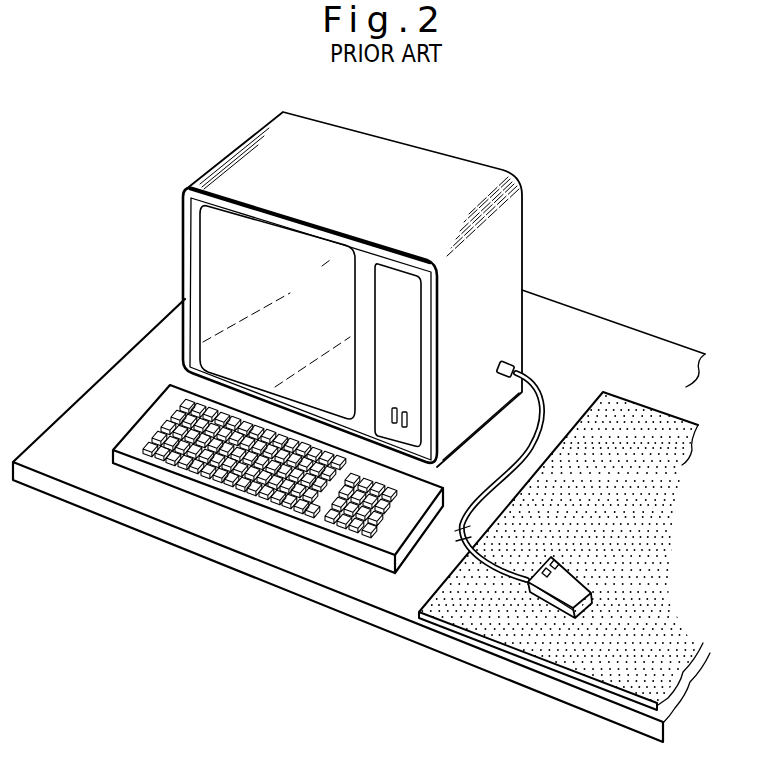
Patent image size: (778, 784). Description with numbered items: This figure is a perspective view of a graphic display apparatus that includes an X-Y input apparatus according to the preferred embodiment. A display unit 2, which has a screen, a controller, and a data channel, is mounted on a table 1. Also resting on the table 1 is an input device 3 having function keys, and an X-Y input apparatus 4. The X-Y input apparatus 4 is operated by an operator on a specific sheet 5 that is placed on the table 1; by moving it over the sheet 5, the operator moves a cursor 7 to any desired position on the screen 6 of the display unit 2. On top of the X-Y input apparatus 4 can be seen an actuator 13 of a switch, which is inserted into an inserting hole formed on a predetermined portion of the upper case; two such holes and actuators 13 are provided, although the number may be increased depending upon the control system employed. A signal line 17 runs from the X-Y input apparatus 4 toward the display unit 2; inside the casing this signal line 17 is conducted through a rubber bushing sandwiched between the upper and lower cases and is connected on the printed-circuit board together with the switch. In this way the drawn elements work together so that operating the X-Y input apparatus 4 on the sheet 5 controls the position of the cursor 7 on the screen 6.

The table 1 is at (305, 562).
The display unit 2 is at (413, 167).
The input device 3 is at (223, 500).
The X-Y input apparatus 4 is at (556, 595).
The specific sheet 5 is at (494, 628).
The screen 6 is at (208, 294).
The cursor 7 is at (256, 250).
The actuator 13 is at (556, 559).
The signal line 17 is at (513, 579).